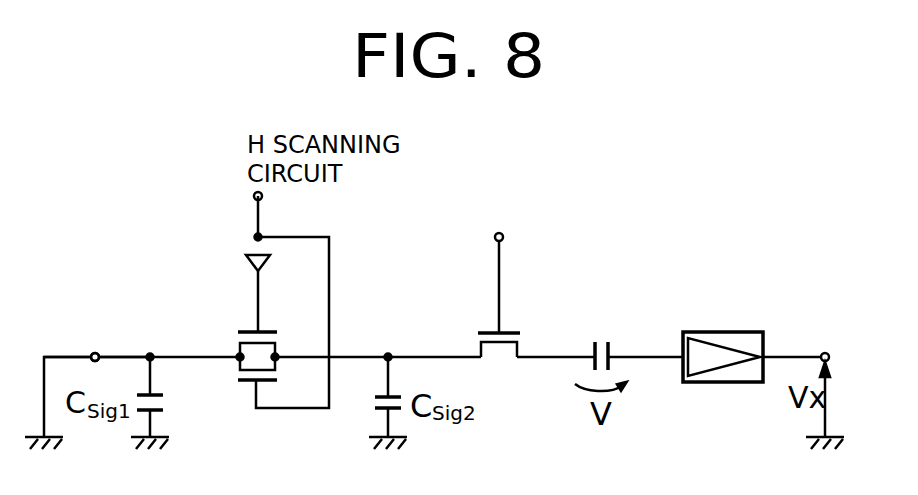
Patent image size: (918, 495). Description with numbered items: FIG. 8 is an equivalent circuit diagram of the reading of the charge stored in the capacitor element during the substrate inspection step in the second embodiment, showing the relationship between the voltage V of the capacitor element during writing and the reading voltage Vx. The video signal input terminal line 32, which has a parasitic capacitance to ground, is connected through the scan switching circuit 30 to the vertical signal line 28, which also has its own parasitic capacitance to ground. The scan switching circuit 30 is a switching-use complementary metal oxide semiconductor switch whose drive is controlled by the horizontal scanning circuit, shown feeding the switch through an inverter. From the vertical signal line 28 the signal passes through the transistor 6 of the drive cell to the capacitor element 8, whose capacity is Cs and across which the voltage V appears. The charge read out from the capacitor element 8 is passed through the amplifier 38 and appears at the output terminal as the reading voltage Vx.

The video signal input terminal line 32 is at (119, 354).
The scan switching circuit 30 is at (248, 383).
The vertical signal line 28 is at (425, 355).
The switching transistor 6 is at (505, 335).
The capacitor element 8 is at (612, 352).
The amplifier 38 is at (728, 331).